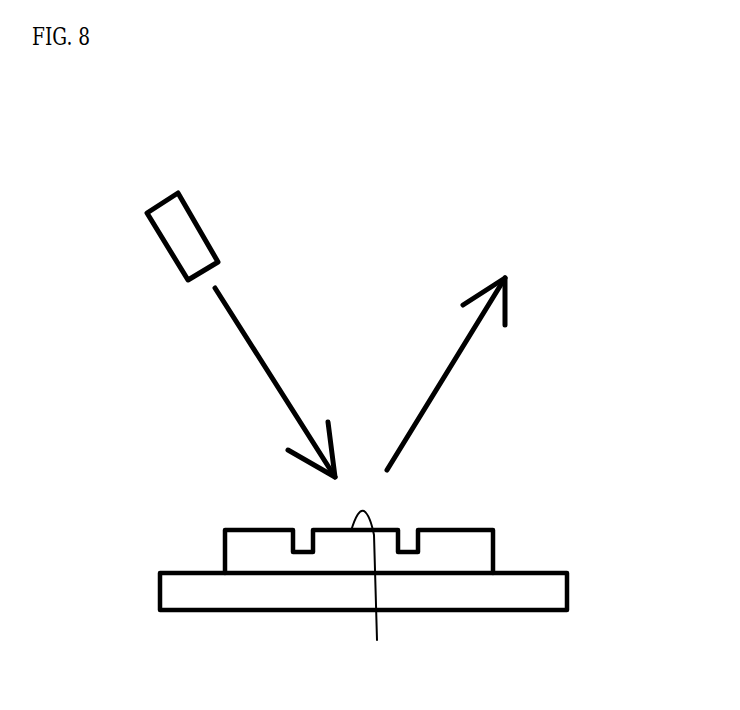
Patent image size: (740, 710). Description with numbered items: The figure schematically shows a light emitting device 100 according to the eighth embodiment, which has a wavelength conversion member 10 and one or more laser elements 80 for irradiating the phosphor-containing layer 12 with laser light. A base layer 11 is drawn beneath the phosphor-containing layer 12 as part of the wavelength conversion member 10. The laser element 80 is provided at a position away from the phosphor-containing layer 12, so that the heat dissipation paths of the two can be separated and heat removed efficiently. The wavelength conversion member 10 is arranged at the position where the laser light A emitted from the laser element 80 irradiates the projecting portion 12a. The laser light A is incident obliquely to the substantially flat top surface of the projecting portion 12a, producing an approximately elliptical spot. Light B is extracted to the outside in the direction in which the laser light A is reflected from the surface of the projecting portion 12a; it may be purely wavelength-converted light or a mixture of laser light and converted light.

The light emitting device 100 is at (575, 220).
The laser element 80 is at (186, 246).
The laser light A is at (257, 348).
The light B is at (442, 388).
The wavelength conversion member 10 is at (570, 547).
The base 11 is at (232, 592).
The phosphor-containing layer 12 is at (457, 557).
The projecting portion 12a is at (377, 601).